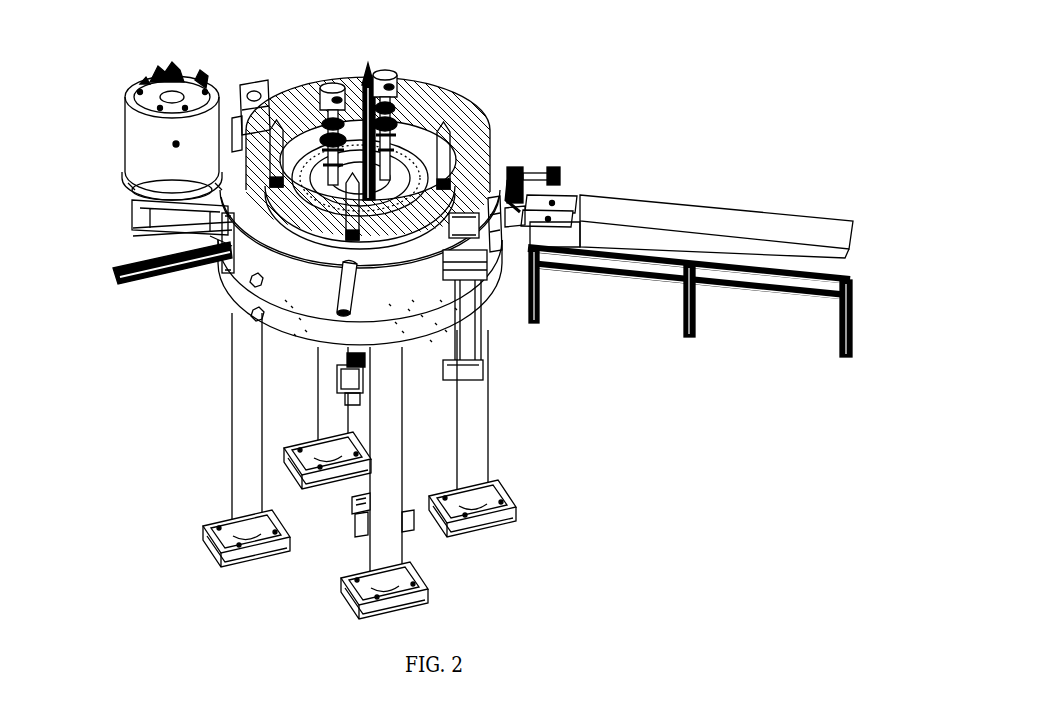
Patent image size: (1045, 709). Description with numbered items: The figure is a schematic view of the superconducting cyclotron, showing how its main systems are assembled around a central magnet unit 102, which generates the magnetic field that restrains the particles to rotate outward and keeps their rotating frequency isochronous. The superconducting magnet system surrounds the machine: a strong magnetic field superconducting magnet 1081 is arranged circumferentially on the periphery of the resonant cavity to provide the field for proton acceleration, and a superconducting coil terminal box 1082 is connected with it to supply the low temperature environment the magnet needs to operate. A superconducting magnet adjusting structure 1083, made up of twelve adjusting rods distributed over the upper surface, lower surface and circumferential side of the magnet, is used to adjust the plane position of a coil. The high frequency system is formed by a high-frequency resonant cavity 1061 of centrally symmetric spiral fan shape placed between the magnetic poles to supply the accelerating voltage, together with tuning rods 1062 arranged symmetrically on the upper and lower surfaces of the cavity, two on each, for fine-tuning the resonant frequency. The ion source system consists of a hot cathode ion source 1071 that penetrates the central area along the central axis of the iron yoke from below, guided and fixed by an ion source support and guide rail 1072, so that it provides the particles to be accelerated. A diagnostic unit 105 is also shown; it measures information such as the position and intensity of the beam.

The magnet unit 102 is at (488, 127).
The diagnostic unit 105 is at (595, 238).
The high-frequency resonant cavity 1061 is at (462, 188).
The tuning rod for the high frequency resonant cavity 1062 is at (338, 98).
The hot cathode ion source 1071 is at (365, 370).
The ion source support and guide rail 1072 is at (362, 535).
The strong magnetic field superconducting magnet 1081 is at (520, 205).
The superconducting coil terminal box 1082 is at (153, 140).
The superconducting magnet adjusting structure 1083 is at (450, 120).